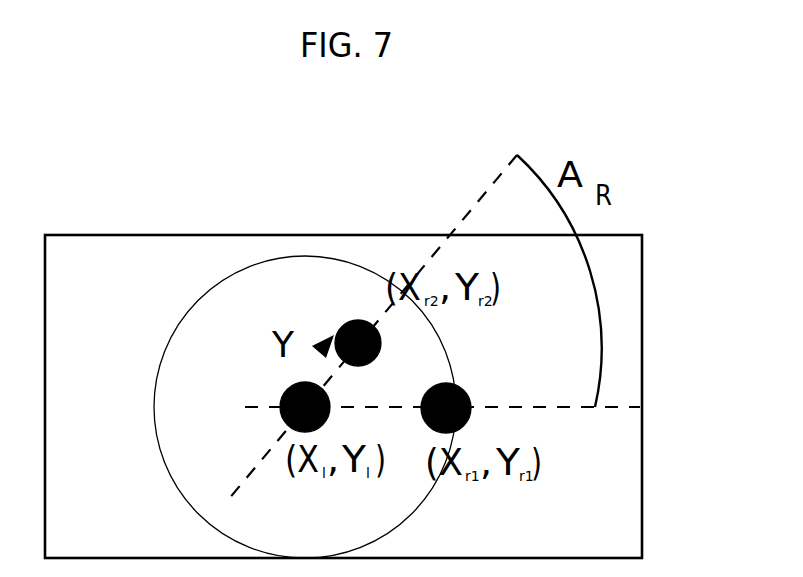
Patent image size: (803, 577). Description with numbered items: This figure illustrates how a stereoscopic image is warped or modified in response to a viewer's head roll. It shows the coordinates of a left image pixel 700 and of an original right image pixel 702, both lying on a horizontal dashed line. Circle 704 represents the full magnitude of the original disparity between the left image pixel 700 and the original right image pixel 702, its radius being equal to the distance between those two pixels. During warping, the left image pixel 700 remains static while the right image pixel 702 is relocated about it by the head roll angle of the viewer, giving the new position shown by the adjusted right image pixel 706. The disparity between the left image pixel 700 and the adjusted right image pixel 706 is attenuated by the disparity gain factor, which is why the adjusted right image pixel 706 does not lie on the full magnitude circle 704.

The left image pixel 700 is at (286, 391).
The original right image pixel 702 is at (468, 394).
The full magnitude circle 704 is at (263, 262).
The adjusted right image pixel 706 is at (357, 320).